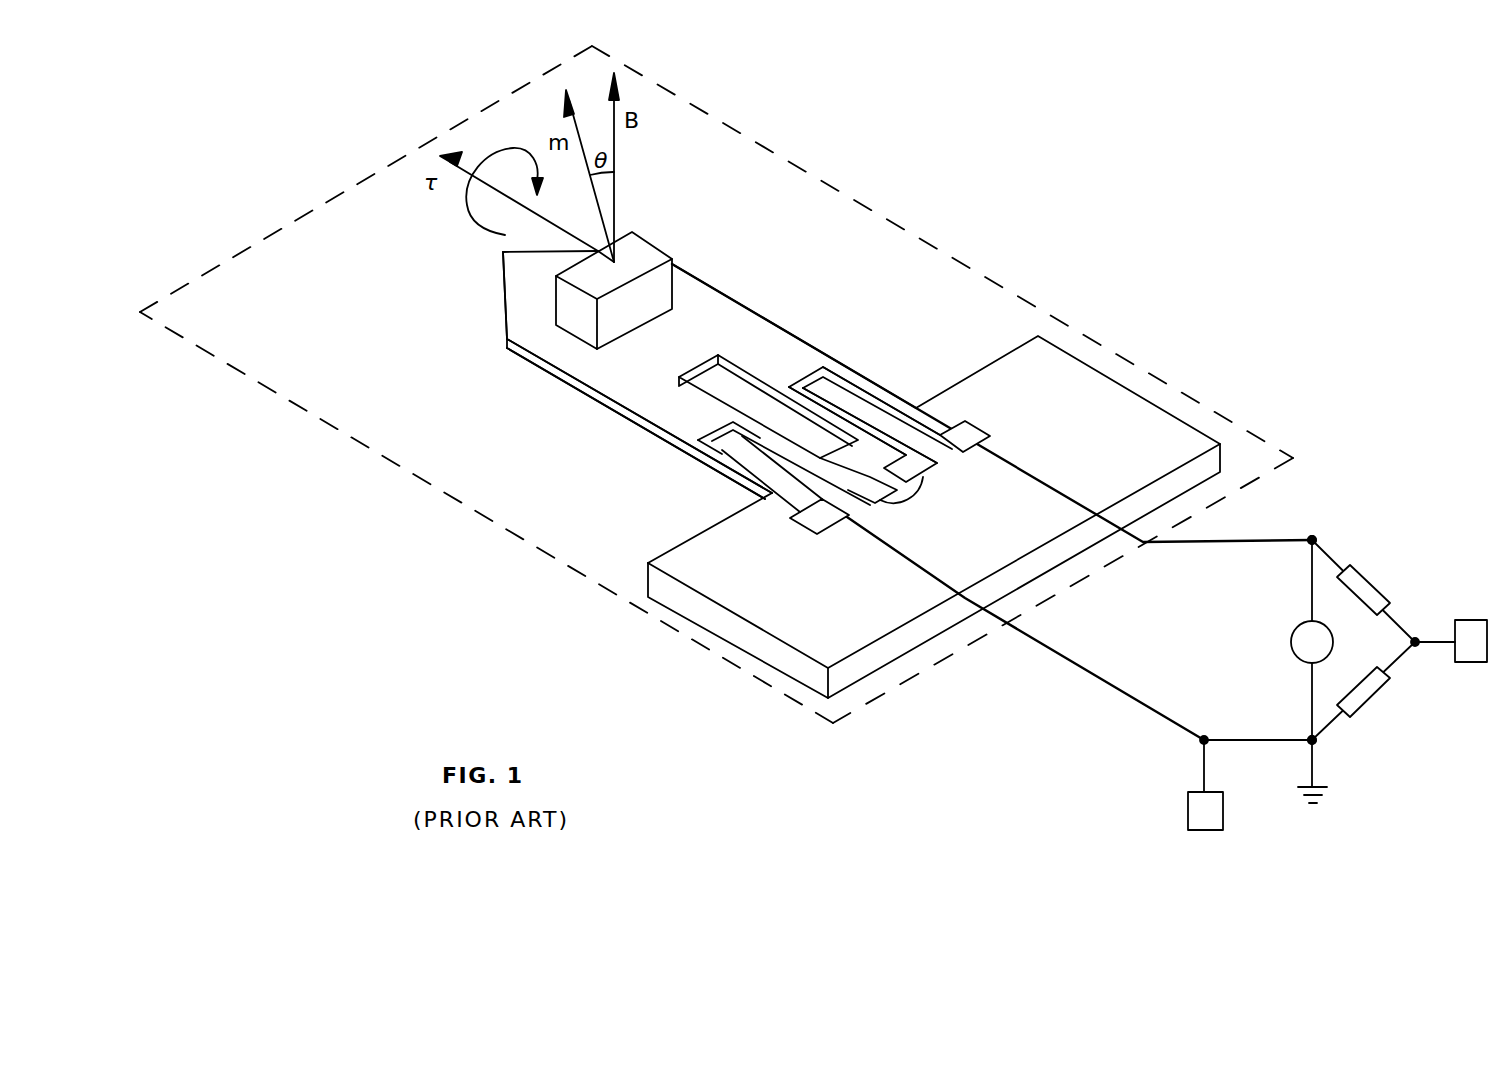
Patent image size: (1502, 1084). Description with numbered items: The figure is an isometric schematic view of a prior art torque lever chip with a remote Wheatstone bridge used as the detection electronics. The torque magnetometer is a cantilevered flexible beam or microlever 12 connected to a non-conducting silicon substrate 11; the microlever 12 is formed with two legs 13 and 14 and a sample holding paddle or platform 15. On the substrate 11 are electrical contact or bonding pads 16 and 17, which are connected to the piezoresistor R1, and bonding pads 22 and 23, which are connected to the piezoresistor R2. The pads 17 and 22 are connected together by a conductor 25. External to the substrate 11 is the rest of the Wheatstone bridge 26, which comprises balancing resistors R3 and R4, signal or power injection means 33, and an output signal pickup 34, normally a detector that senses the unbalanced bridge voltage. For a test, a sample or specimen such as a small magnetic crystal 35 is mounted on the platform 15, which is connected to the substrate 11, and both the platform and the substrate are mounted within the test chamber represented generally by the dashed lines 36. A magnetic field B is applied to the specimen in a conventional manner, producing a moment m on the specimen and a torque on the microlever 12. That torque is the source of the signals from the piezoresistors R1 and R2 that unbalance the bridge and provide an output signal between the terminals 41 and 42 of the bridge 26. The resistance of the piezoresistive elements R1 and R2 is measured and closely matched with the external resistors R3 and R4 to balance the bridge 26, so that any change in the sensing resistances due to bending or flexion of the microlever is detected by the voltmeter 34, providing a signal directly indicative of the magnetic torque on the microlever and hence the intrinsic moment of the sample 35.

The non-conducting silicon substrate 11 is at (1110, 383).
The microlever 12 is at (757, 283).
The leg 13 is at (794, 346).
The leg 14 is at (669, 420).
The sample holding paddle or platform 15 is at (512, 285).
The bonding pad 16 is at (963, 426).
The bonding pad 17 is at (925, 483).
The bonding pad 22 is at (874, 505).
The bonding pad 23 is at (820, 537).
The conductor 25 is at (918, 492).
The Wheatstone bridge 26 is at (1424, 603).
The signal or power injection means 33 is at (1468, 664).
The output signal pickup 34 is at (1291, 642).
The small magnetic crystal 35 is at (645, 247).
The test chamber 36 is at (906, 229).
The terminal 41 is at (1316, 537).
The terminal 42 is at (1318, 743).
The piezoresistor R1 is at (849, 377).
The piezoresistor R2 is at (710, 467).
The balancing resistor R3 is at (1371, 699).
The balancing resistor R4 is at (1370, 586).